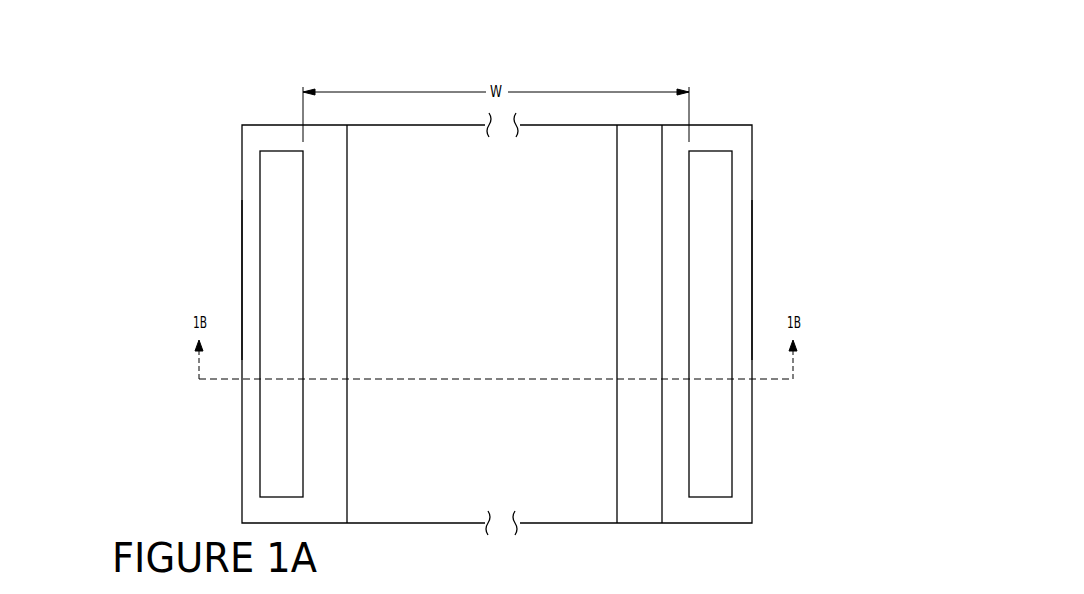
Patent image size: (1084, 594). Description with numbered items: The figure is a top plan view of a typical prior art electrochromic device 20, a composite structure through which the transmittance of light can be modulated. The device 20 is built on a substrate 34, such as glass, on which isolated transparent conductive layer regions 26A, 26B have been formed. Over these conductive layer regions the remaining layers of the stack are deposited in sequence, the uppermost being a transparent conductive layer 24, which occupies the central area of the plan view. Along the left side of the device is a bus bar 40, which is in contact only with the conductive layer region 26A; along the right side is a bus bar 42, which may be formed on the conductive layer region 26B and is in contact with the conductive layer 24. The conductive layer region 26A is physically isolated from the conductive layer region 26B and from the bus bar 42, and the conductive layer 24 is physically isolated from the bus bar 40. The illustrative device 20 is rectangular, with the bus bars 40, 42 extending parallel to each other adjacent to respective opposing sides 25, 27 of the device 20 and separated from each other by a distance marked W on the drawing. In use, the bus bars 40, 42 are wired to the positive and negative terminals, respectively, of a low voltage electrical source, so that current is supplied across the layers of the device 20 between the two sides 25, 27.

The electrochromic device 20 is at (776, 177).
The transparent conductive layer 24 is at (569, 331).
The side of the device 25 is at (241, 283).
The transparent conductive layer region 26A is at (309, 519).
The transparent conductive layer region 26B is at (702, 518).
The side of the device 27 is at (753, 283).
The substrate 34 is at (647, 451).
The bus bar 40 is at (271, 249).
The bus bar 42 is at (722, 249).